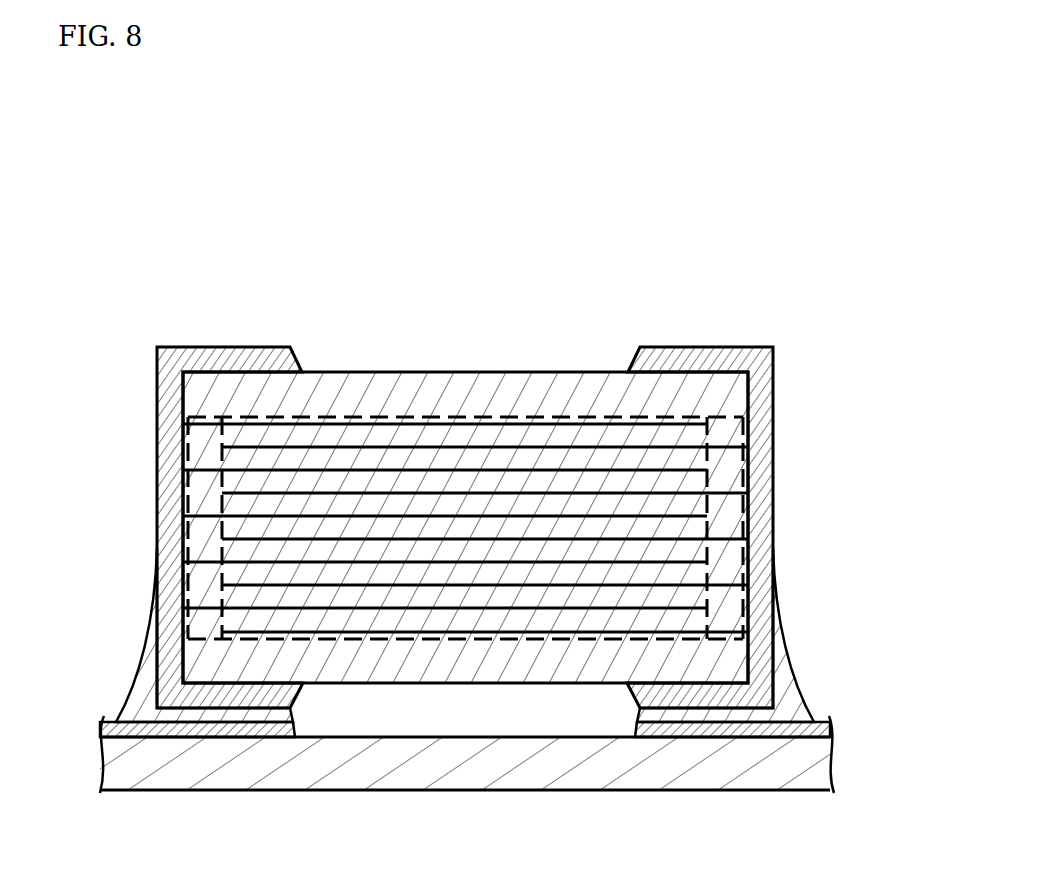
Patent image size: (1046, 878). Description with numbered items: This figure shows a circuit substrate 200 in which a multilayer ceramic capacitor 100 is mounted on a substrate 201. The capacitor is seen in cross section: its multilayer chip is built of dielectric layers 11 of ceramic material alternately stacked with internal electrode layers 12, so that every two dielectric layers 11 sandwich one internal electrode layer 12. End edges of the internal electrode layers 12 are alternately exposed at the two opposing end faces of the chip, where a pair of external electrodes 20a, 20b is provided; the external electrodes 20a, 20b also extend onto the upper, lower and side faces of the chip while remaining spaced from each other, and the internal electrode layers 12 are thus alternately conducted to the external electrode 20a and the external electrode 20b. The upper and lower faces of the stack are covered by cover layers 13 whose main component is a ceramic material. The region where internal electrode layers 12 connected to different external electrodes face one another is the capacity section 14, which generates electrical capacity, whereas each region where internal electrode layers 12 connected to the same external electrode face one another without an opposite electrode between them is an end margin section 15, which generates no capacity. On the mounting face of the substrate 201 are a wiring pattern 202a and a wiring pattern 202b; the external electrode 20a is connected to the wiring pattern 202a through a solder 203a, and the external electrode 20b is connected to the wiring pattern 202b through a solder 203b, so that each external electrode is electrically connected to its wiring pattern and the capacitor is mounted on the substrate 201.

The circuit substrate 200 is at (913, 169).
The multilayer ceramic capacitor 100 is at (679, 291).
The dielectric layer 11 is at (578, 598).
The internal electrode layer 12 is at (450, 563).
The cover layer 13 is at (367, 386).
The capacity section 14 is at (465, 572).
The end margin section 15 is at (205, 413).
The external electrode 20a is at (178, 347).
The external electrode 20b is at (738, 346).
The substrate 201 is at (650, 782).
The wiring pattern 202a is at (105, 725).
The wiring pattern 202b is at (827, 727).
The solder 203a is at (133, 692).
The solder 203b is at (793, 693).